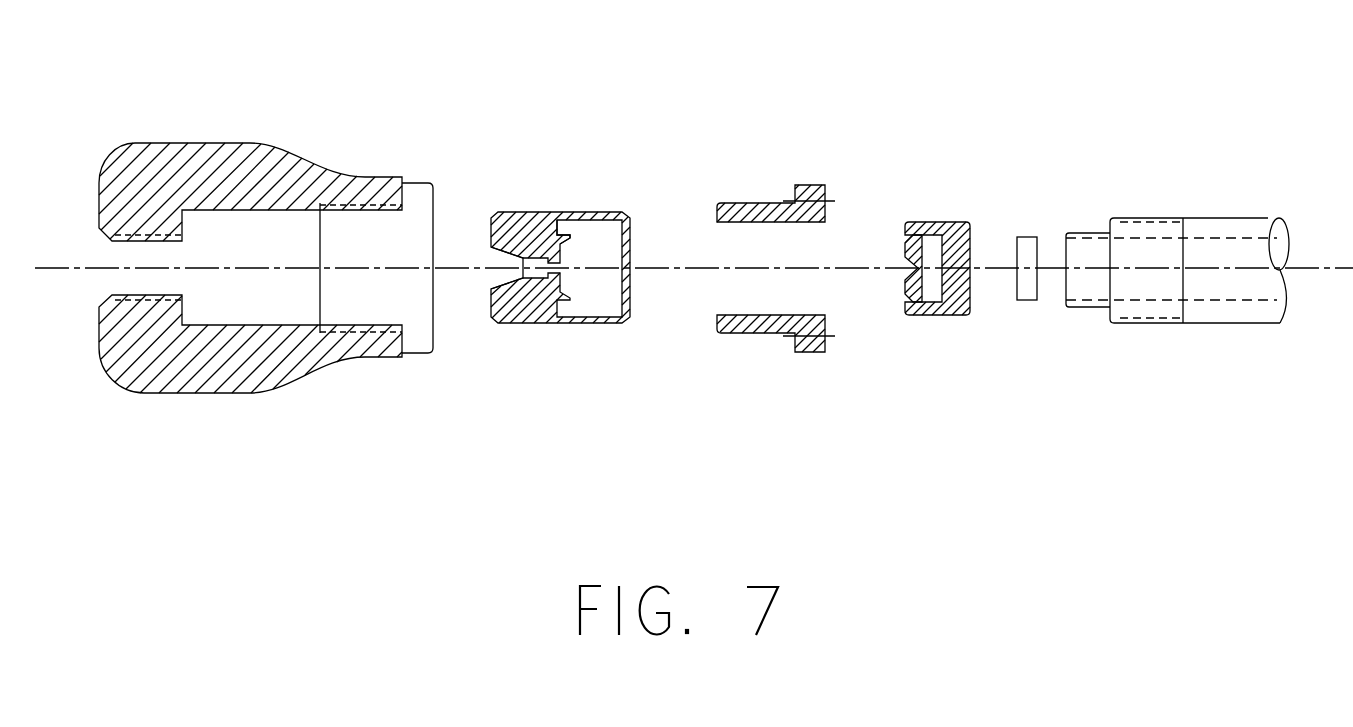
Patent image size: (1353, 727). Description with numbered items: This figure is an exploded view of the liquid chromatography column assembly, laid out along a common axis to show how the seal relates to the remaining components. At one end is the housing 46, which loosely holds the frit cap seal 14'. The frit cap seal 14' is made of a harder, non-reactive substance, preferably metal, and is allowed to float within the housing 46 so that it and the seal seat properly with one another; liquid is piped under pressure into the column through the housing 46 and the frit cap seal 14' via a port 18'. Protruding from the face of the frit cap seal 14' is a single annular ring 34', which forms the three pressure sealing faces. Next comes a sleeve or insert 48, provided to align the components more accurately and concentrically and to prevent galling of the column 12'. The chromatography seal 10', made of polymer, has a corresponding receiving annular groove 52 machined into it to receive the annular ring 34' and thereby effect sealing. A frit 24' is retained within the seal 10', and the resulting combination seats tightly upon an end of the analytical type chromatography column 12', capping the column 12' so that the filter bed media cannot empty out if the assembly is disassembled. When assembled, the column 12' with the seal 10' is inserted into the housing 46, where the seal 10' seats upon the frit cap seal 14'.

The housing 46 is at (266, 334).
The frit cap seal 14′ is at (592, 351).
The port 18′ is at (440, 177).
The annular ring 34′ is at (625, 159).
The sleeve or insert 48 is at (827, 215).
The chromatography seal 10′ is at (998, 327).
The receiving annular groove 52 is at (926, 388).
The frit 24′ is at (1085, 164).
The chromatography column 12′ is at (1177, 210).